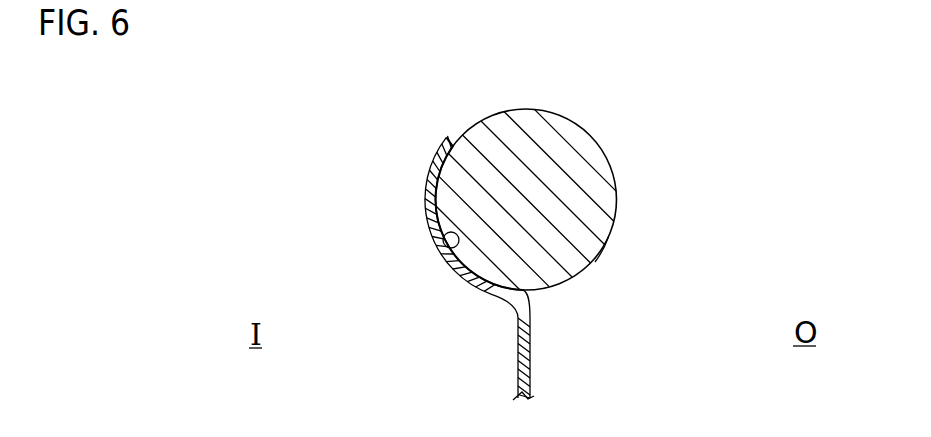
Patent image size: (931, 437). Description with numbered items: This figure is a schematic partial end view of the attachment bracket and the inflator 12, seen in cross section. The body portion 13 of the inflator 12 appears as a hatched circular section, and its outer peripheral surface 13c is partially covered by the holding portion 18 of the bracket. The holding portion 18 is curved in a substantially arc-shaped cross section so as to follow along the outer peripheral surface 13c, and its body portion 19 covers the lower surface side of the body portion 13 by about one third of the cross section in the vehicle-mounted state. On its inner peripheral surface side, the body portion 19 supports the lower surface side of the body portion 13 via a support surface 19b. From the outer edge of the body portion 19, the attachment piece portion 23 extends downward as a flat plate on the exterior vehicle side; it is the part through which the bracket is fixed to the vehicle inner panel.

The body portion 13 is at (597, 160).
The inflator 12 is at (608, 199).
The outer peripheral surface 13c is at (608, 237).
The body portion 19 is at (426, 208).
The holding portion 18 is at (388, 227).
The support surface 19b is at (447, 248).
The attachment piece portion 23 is at (532, 358).